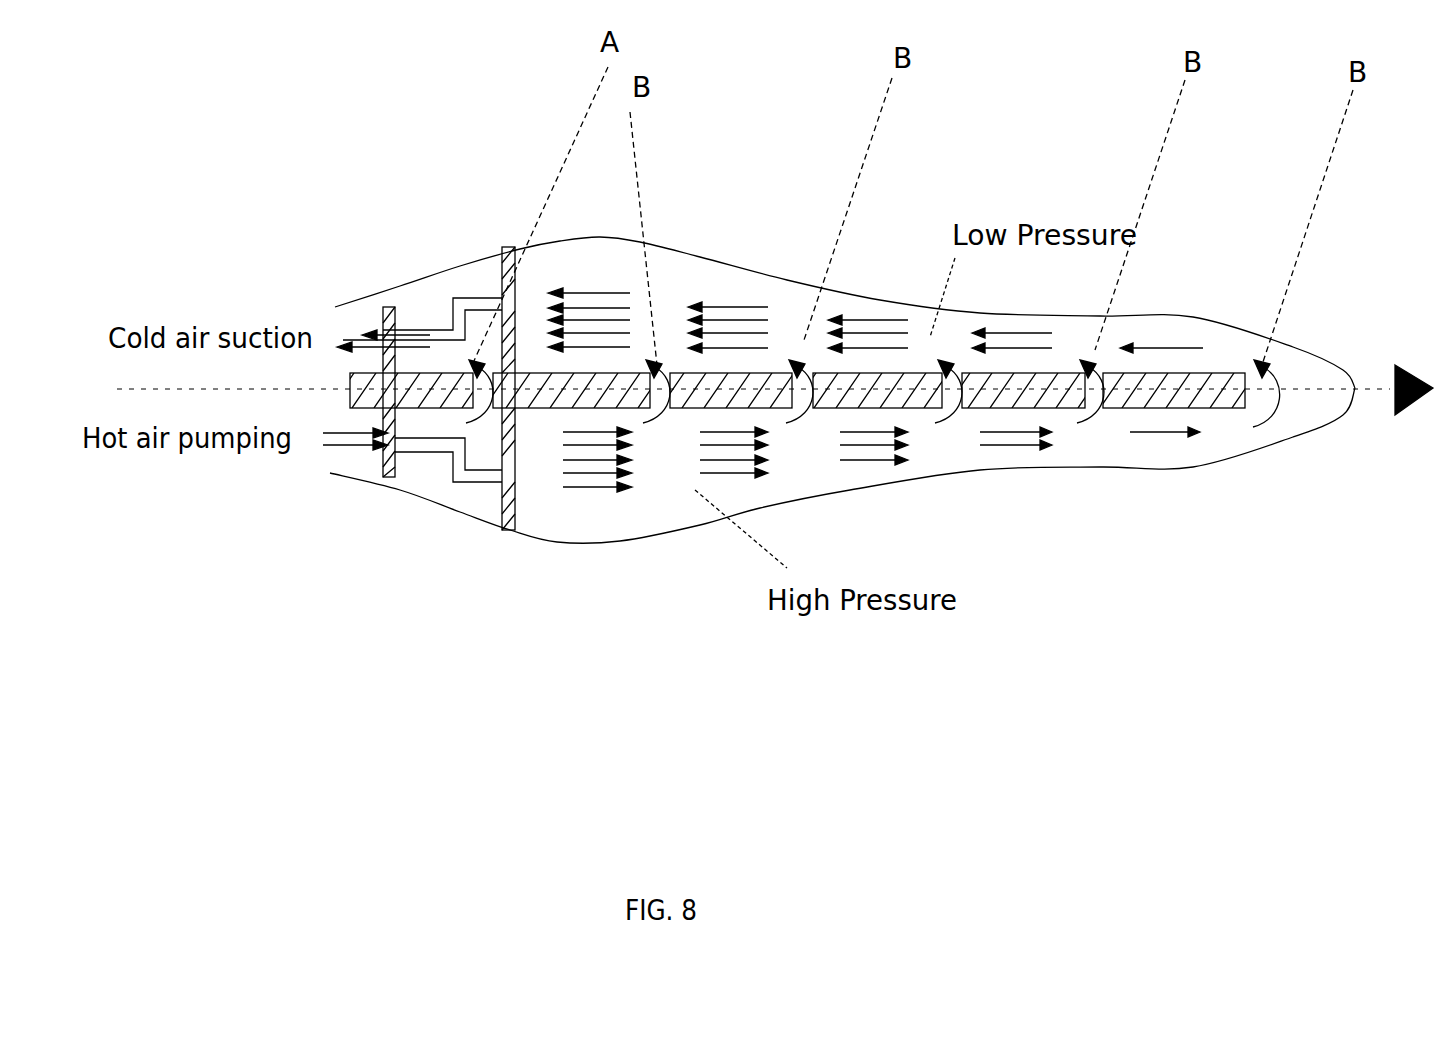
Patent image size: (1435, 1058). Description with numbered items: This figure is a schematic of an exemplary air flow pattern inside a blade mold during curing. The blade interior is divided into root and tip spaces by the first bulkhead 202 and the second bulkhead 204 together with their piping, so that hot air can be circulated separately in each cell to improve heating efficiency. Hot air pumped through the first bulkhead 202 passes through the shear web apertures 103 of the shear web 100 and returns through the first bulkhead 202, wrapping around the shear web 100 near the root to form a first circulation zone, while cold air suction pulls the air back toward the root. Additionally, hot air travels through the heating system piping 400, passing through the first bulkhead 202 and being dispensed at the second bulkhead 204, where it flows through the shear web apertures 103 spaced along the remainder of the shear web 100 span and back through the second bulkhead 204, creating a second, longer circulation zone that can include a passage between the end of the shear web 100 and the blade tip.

The shear web 100 is at (718, 390).
The shear web apertures 103 is at (1093, 407).
The first bulkhead 202 is at (388, 310).
The second bulkhead 204 is at (507, 273).
The heating system piping 400 is at (460, 445).